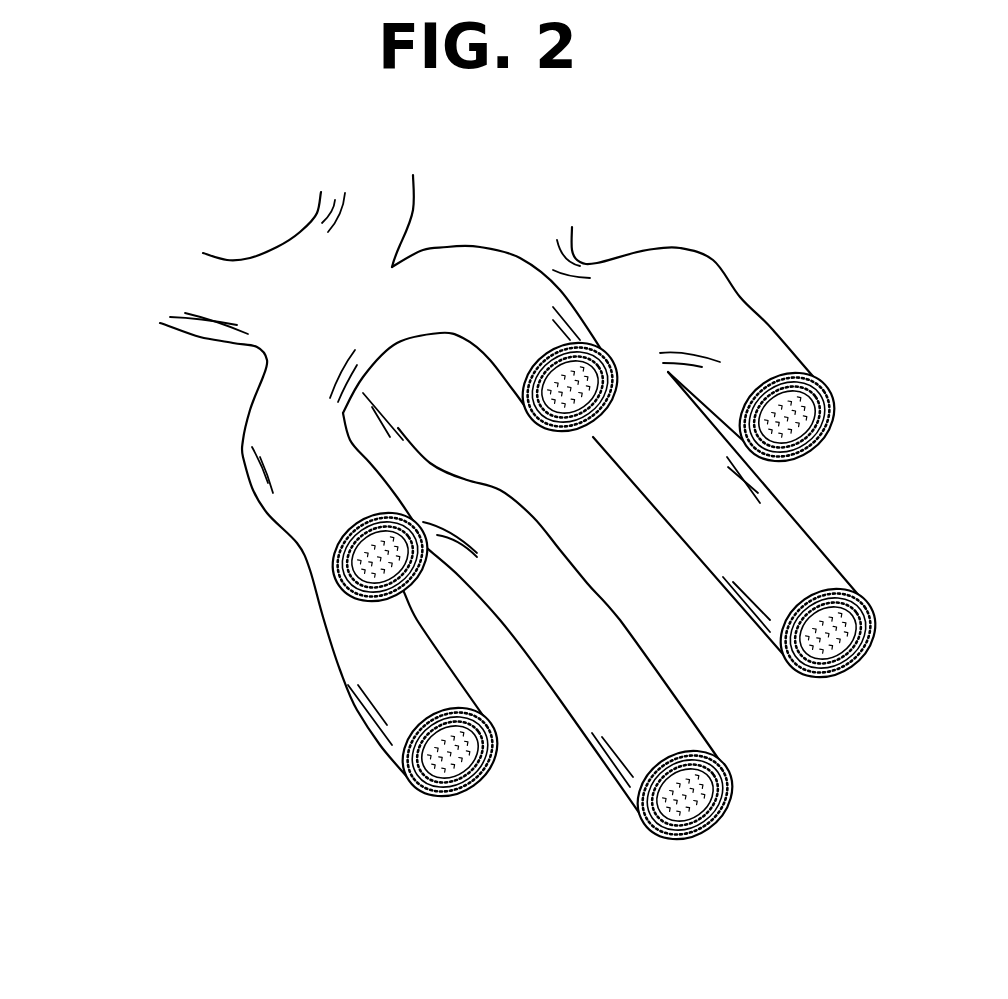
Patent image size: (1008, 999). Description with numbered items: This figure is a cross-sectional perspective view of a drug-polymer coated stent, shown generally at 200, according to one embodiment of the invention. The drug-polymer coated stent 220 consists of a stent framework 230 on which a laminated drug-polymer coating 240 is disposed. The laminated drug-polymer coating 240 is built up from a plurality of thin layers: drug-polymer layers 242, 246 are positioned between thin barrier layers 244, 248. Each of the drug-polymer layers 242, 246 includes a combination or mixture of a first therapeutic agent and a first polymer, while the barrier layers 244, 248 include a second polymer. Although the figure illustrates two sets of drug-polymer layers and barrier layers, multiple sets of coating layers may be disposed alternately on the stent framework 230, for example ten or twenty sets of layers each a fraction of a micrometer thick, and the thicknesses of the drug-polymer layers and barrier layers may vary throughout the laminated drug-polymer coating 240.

The drug-polymer coated stent view 200 is at (92, 172).
The drug-polymer coated stent 220 is at (158, 402).
The laminated drug-polymer coating 240 is at (303, 534).
The stent framework 230 is at (332, 578).
The drug-polymer layer 242 is at (342, 588).
The barrier layer 244 is at (350, 607).
The drug-polymer layer 246 is at (356, 612).
The barrier layer 248 is at (362, 612).